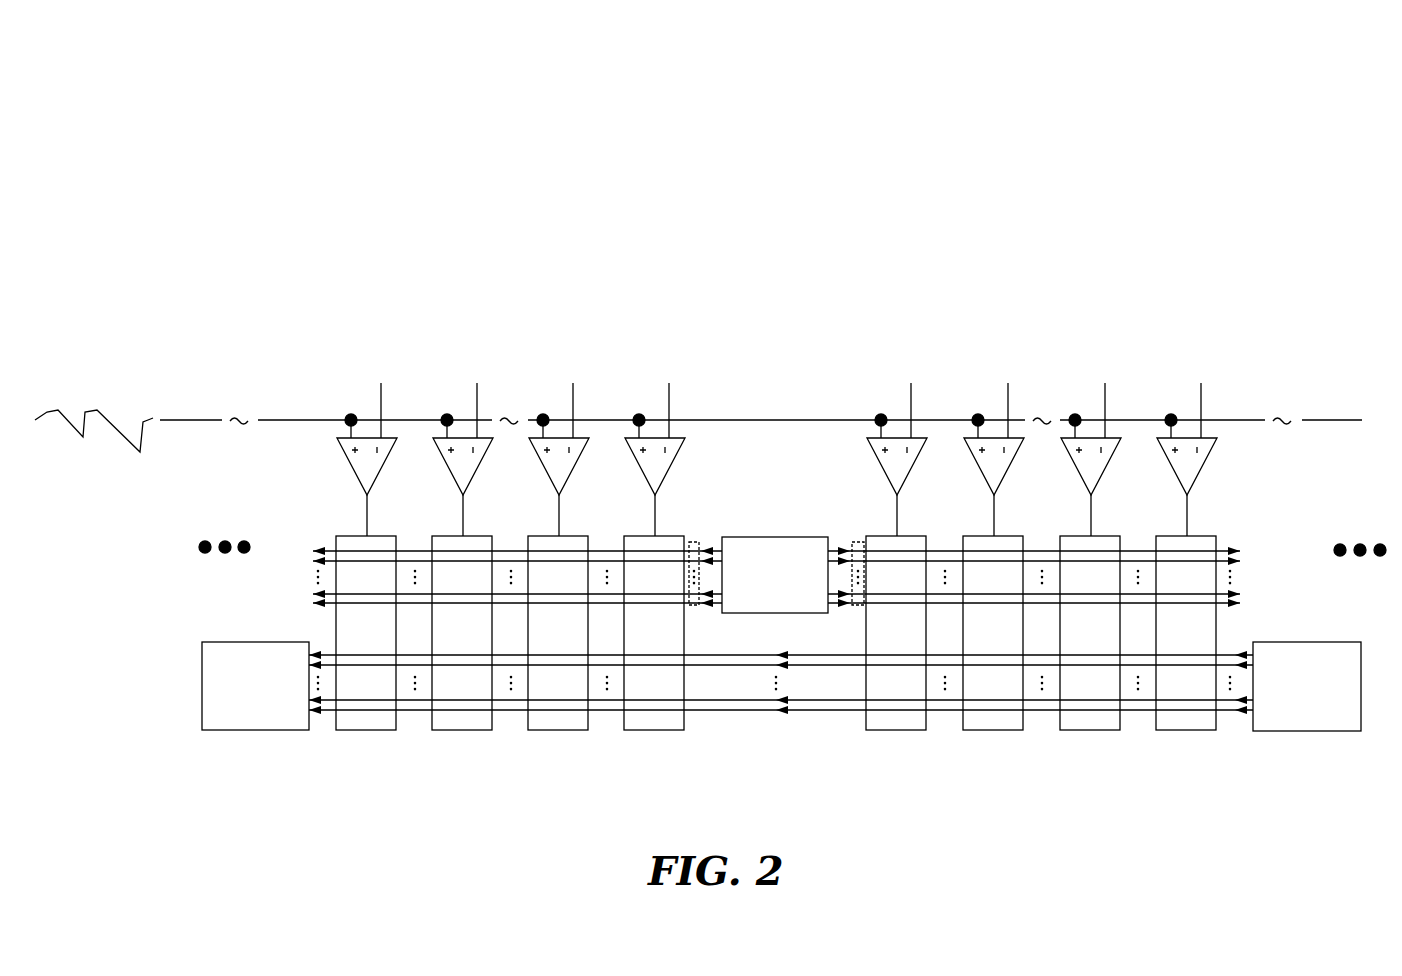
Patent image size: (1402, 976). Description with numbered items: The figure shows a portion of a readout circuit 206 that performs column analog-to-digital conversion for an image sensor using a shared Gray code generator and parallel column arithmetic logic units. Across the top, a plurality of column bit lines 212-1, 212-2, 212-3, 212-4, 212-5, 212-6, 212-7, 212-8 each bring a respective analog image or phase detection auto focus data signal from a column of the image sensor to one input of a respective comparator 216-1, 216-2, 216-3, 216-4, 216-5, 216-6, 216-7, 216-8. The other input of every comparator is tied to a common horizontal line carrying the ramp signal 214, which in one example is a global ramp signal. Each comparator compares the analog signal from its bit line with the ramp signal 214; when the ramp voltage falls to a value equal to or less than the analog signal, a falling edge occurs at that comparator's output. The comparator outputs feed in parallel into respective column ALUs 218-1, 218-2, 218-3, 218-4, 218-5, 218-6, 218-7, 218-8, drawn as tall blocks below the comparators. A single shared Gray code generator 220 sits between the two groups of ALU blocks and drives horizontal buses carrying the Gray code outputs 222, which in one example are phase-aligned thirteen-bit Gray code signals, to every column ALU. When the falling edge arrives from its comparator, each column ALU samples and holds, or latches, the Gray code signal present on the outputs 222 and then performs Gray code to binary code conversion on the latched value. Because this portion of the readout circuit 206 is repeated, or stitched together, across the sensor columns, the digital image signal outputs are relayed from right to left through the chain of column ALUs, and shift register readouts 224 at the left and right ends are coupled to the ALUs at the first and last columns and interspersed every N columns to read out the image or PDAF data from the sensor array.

The readout circuit 206 is at (1357, 97).
The column bit line 212-1 is at (381, 385).
The column bit line 212-2 is at (477, 385).
The column bit line 212-3 is at (573, 385).
The column bit line 212-4 is at (669, 385).
The column bit line 212-5 is at (911, 385).
The column bit line 212-6 is at (1008, 385).
The column bit line 212-7 is at (1105, 385).
The column bit line 212-8 is at (1201, 385).
The ramp signal 214 is at (83, 485).
The comparator 216-1 is at (349, 461).
The comparator 216-2 is at (445, 461).
The comparator 216-3 is at (541, 461).
The comparator 216-4 is at (637, 461).
The comparator 216-5 is at (879, 461).
The comparator 216-6 is at (976, 461).
The comparator 216-7 is at (1073, 461).
The comparator 216-8 is at (1169, 461).
The column ALU 218-1 is at (361, 543).
The column ALU 218-2 is at (457, 543).
The column ALU 218-3 is at (553, 543).
The column ALU 218-4 is at (649, 543).
The column ALU 218-5 is at (891, 543).
The column ALU 218-6 is at (988, 543).
The column ALU 218-7 is at (1085, 543).
The column ALU 218-8 is at (1181, 543).
The Gray code generator 220 is at (769, 535).
The Gray code outputs 222 is at (691, 608).
The shift register readout 224 is at (258, 641).